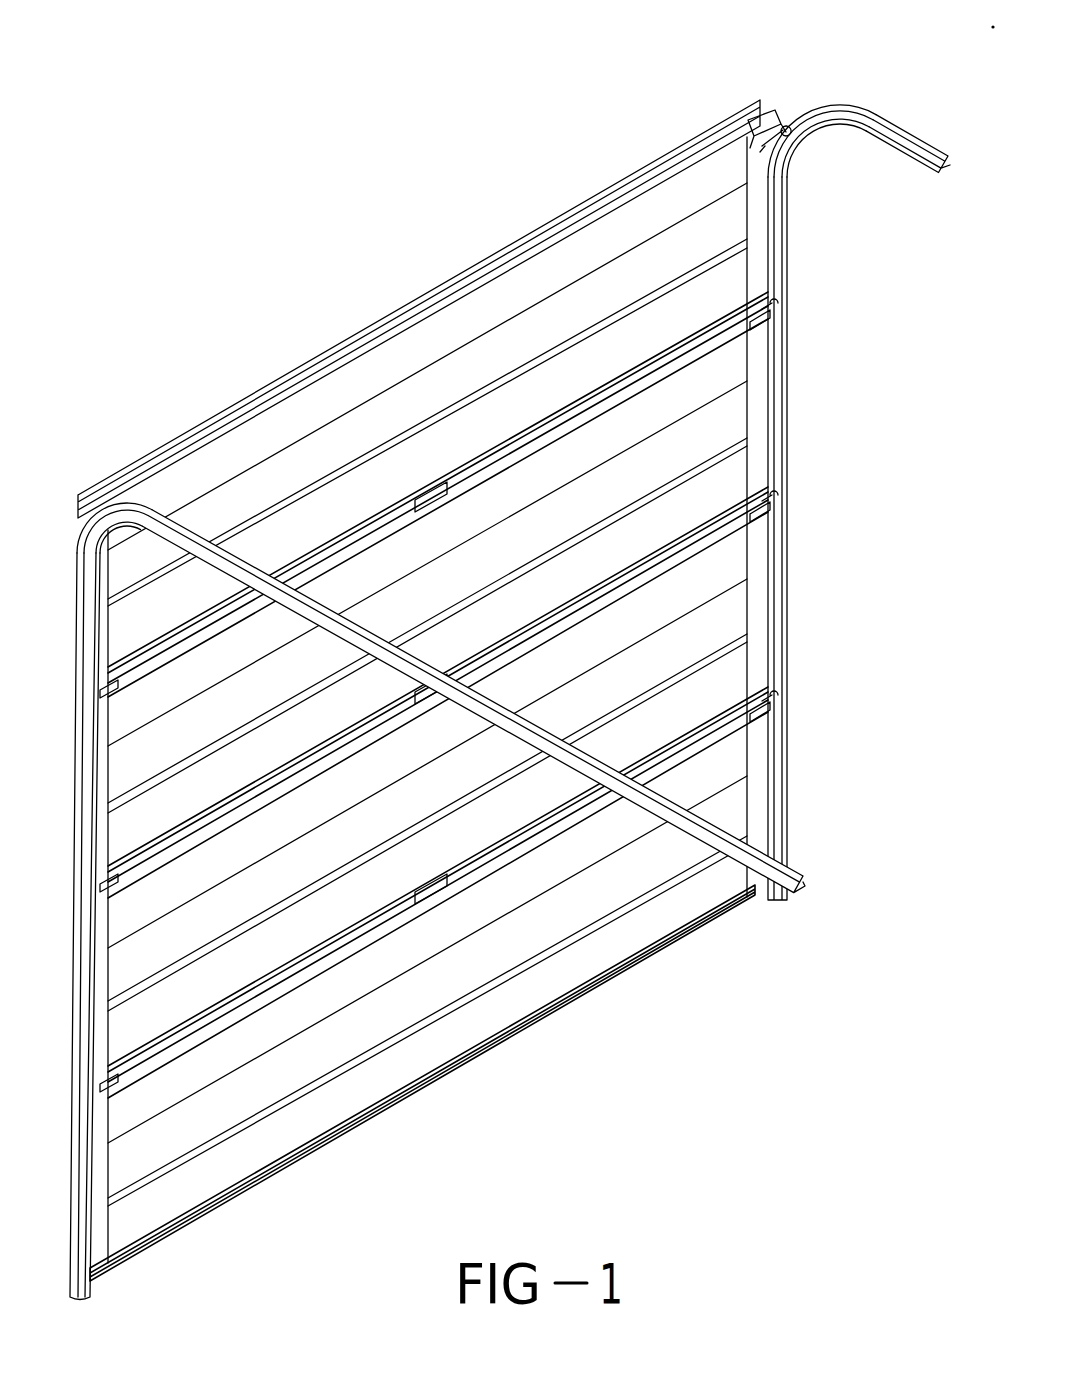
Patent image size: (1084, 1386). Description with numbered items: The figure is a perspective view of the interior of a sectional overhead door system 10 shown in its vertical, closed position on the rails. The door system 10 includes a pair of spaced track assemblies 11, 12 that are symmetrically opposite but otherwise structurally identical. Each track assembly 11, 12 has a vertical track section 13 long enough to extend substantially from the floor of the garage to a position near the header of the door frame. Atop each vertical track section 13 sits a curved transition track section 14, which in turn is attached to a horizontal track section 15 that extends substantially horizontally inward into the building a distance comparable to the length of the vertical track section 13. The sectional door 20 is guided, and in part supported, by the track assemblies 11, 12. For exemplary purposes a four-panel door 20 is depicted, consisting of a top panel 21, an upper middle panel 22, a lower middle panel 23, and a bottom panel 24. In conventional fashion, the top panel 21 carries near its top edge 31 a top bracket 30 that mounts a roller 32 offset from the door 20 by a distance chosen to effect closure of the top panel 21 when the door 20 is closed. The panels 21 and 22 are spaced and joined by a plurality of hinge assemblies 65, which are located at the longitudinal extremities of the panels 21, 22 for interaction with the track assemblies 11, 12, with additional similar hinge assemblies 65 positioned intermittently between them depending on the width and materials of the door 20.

The sectional overhead door system 10 is at (828, 84).
The track assembly 11 is at (896, 147).
The track assembly 12 is at (695, 828).
The vertical track section 13 is at (783, 361).
The curved transition track section 14 is at (836, 118).
The horizontal track section 15 is at (918, 145).
The sectional door 20 is at (485, 256).
The top panel 21 is at (672, 262).
The upper middle panel 22 is at (673, 445).
The lower middle panel 23 is at (673, 640).
The bottom panel 24 is at (712, 768).
The top bracket 30 is at (764, 128).
The top edge 31 is at (641, 185).
The roller 32 is at (788, 126).
The hinge assembly 65 is at (786, 309).